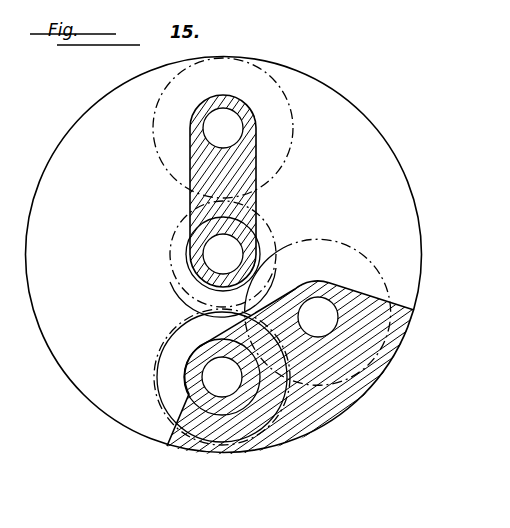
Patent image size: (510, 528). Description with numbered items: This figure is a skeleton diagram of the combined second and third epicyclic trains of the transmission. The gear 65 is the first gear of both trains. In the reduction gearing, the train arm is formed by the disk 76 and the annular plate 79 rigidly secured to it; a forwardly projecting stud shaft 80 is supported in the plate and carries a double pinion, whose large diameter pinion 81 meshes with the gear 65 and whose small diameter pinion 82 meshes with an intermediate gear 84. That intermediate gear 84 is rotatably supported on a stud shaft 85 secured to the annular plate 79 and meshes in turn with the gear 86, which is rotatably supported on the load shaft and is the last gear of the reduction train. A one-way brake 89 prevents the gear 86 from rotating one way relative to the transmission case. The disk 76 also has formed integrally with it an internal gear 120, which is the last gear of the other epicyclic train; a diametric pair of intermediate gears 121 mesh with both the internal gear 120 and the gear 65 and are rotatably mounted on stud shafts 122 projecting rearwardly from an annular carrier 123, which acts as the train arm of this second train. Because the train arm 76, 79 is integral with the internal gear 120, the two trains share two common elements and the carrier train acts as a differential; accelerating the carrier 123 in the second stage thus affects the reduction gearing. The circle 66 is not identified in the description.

The internal gear 120 is at (63, 133).
The intermediate gears 121 is at (293, 146).
The stud shafts 122 is at (229, 114).
The annular carrier 123 is at (257, 202).
The gear 65 is at (175, 233).
The annular flange 66 is at (198, 306).
The gear 86 is at (186, 249).
The one-way brake 89 is at (197, 284).
The small diameter pinion 82 is at (195, 346).
The large diameter pinion 81 is at (157, 371).
The stud shaft 80 is at (212, 380).
The stud shaft 85 is at (339, 270).
The intermediate gear 84 is at (370, 264).
The disk 76 is at (270, 336).
The annular plate 79 is at (350, 406).